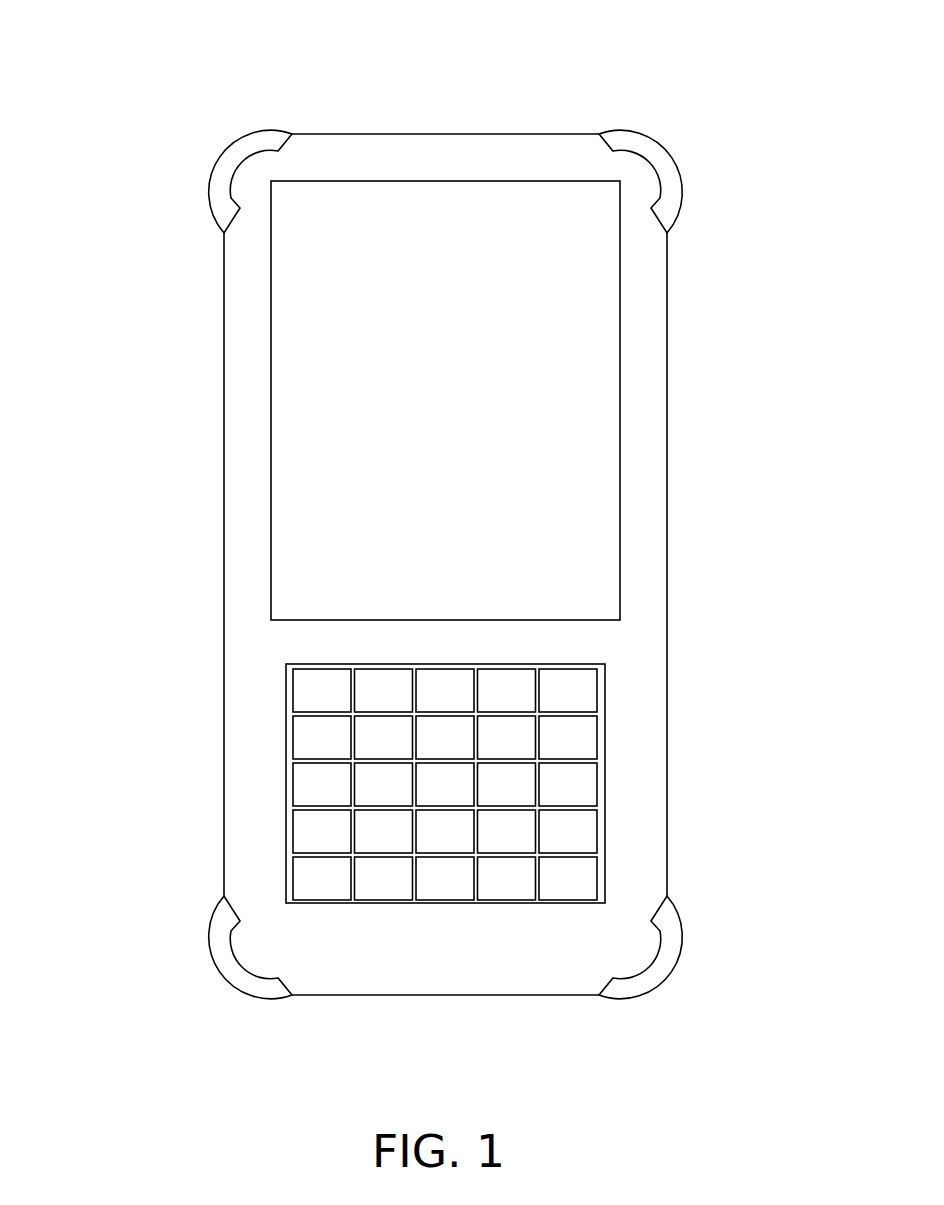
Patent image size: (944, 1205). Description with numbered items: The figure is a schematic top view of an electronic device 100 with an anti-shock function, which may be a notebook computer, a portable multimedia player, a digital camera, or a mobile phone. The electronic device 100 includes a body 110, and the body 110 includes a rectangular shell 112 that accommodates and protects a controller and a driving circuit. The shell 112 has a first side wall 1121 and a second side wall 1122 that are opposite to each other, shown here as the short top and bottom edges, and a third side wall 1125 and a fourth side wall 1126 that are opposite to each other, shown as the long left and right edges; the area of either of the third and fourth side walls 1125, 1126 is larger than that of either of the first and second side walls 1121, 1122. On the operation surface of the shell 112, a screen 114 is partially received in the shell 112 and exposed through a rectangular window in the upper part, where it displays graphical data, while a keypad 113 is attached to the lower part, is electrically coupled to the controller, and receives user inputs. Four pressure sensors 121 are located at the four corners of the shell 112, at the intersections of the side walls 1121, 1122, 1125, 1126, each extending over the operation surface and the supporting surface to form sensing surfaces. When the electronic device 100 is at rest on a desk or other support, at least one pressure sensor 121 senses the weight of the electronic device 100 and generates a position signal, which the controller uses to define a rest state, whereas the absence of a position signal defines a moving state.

The electronic device 100 is at (198, 75).
The body 110 is at (700, 258).
The shell 112 is at (643, 328).
The keypad 113 is at (585, 787).
The screen 114 is at (592, 430).
The pressure sensor 121 is at (663, 167).
The first side wall 1121 is at (373, 134).
The second side wall 1122 is at (452, 995).
The third side wall 1125 is at (223, 440).
The fourth side wall 1126 is at (667, 514).